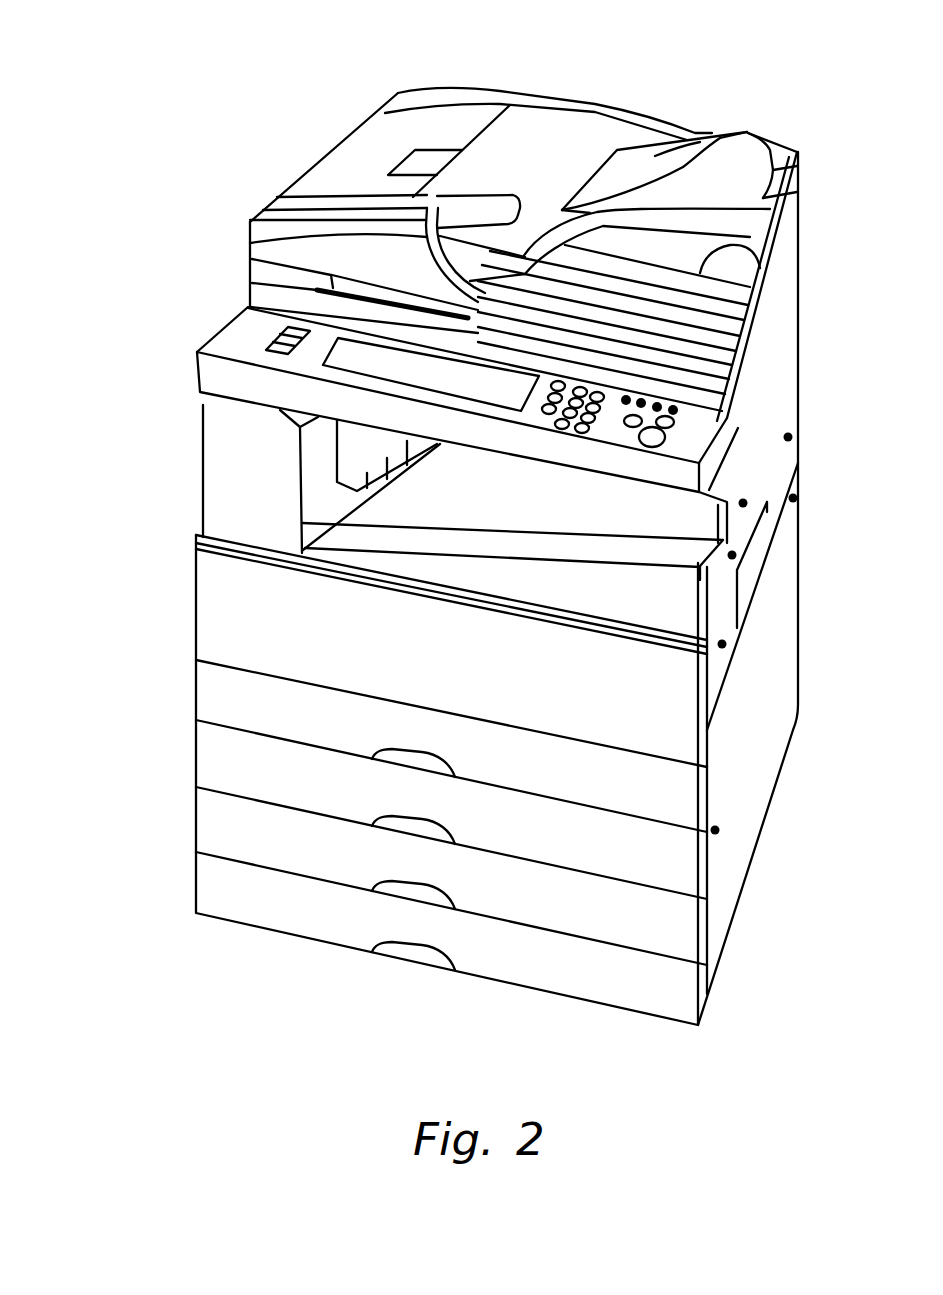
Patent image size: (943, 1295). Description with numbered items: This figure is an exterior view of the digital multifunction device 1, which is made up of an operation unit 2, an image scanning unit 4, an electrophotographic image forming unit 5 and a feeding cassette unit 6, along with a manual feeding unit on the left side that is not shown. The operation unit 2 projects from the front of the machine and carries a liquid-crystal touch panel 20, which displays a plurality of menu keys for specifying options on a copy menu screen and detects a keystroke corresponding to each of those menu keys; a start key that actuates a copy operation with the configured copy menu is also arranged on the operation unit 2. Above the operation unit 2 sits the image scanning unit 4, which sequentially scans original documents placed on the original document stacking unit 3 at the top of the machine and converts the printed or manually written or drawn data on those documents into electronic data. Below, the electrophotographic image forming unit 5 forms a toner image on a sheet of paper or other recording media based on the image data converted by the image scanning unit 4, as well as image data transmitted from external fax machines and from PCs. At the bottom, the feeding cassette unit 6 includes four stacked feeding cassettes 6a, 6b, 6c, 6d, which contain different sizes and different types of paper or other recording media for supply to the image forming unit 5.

The digital multifunction device 1 is at (236, 140).
The operation unit 2 is at (247, 322).
The liquid-crystal touch panel 20 is at (377, 363).
The original document stacking unit 3 is at (700, 131).
The image scanning unit 4 is at (766, 332).
The electrophotographic image forming unit 5 is at (212, 612).
The feeding cassette unit 6 is at (54, 661).
The feeding cassette 6a is at (218, 705).
The feeding cassette 6b is at (218, 766).
The feeding cassette 6c is at (218, 828).
The feeding cassette 6d is at (218, 888).